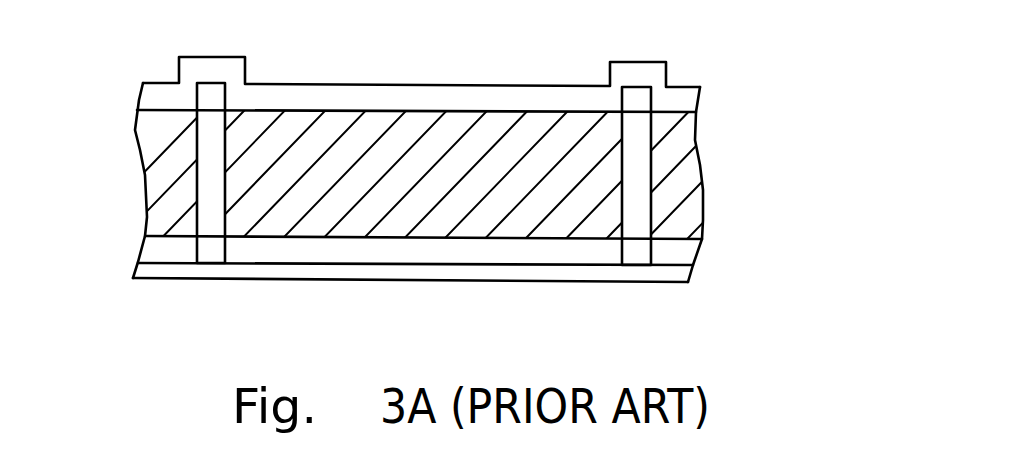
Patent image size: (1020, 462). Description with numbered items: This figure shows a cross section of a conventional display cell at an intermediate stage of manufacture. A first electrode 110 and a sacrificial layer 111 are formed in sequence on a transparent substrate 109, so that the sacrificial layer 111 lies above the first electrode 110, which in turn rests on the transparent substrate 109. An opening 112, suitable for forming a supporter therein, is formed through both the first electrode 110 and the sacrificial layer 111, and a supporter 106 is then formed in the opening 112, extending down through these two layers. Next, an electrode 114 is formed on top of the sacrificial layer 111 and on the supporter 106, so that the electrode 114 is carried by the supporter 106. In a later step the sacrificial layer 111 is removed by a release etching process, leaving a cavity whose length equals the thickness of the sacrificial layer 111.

The supporter 106 is at (643, 190).
The transparent substrate 109 is at (675, 276).
The first electrode 110 is at (610, 252).
The sacrificial layer 111 is at (590, 182).
The opening 112 is at (651, 163).
The electrode 114 is at (680, 102).